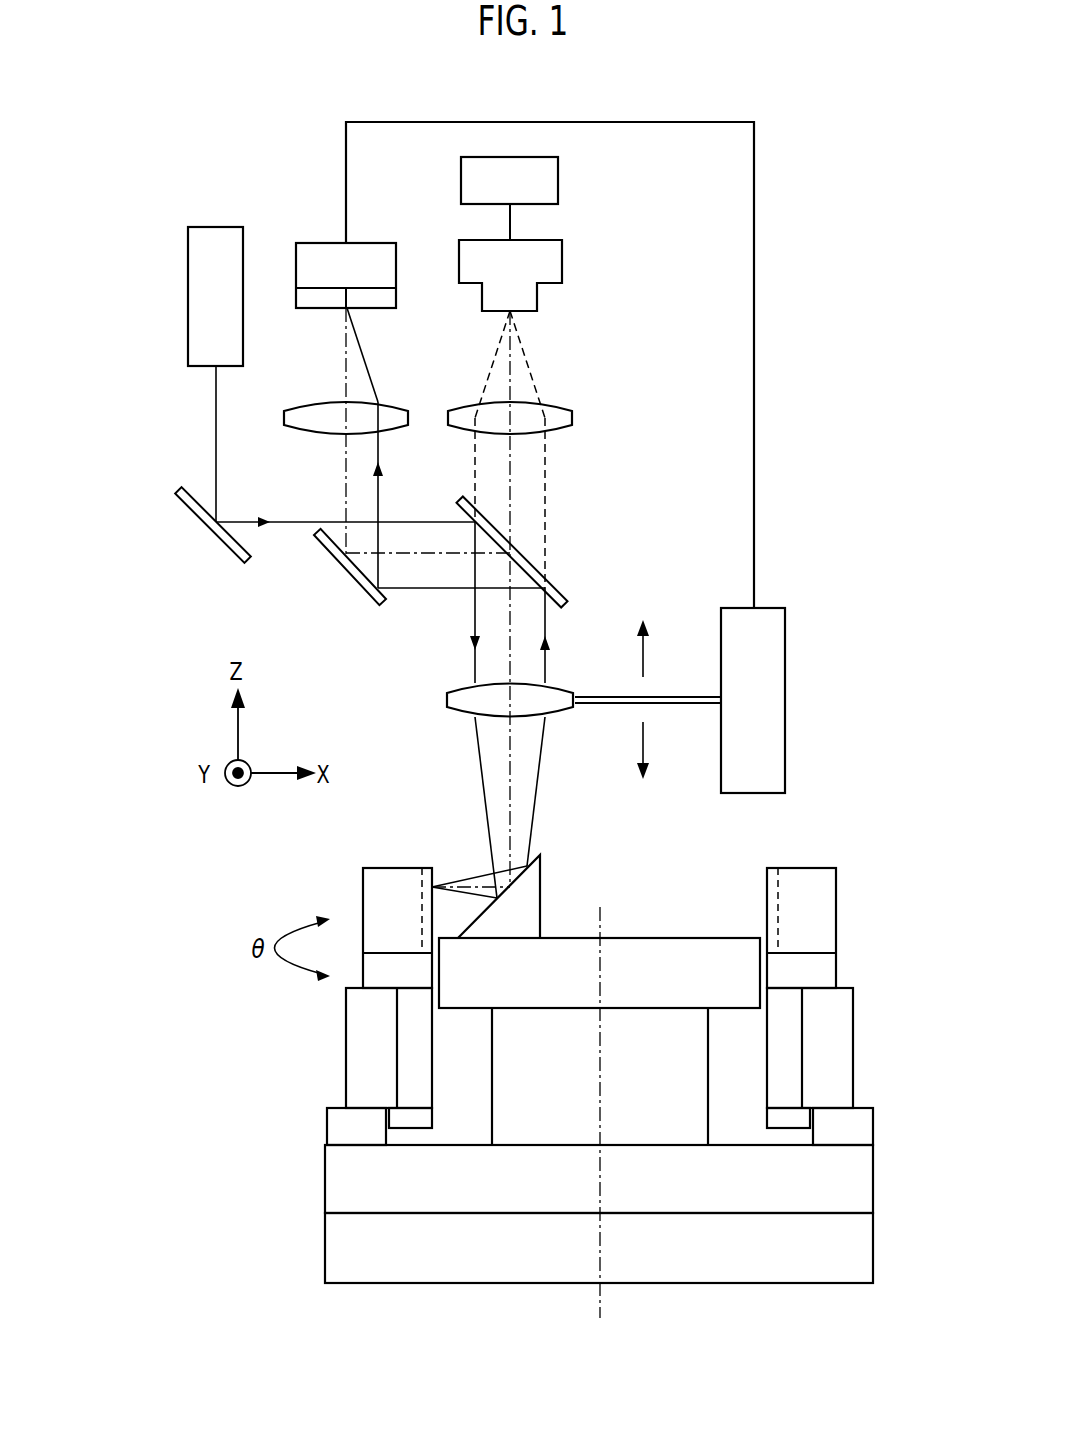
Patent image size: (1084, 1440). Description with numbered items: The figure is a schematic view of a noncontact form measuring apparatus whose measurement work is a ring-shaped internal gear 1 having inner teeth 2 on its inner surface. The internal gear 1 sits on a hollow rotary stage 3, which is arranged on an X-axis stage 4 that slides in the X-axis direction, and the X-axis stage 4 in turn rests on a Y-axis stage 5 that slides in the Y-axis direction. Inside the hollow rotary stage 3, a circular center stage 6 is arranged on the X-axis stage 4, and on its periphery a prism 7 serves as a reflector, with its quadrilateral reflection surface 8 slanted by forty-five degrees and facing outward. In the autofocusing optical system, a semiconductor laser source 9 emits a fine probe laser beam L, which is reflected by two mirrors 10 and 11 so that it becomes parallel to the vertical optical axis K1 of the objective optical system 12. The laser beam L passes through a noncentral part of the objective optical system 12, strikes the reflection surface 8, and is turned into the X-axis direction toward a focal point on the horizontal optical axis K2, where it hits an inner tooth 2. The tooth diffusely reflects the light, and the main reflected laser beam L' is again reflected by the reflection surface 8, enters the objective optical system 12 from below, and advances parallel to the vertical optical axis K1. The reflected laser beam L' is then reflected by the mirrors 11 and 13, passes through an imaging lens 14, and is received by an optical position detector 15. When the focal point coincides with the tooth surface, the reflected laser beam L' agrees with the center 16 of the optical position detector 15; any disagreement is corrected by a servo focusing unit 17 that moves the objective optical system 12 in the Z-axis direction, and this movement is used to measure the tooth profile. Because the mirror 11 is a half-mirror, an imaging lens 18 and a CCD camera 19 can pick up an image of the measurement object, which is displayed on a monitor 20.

The internal gear 1 is at (800, 868).
The inner teeth 2 is at (443, 908).
The rotary stage 3 is at (837, 972).
The X-axis stage 4 is at (753, 1200).
The Y-axis stage 5 is at (405, 1270).
The center stage 6 is at (680, 938).
The prism 7 is at (543, 887).
The reflection surface 8 is at (517, 872).
The laser source 9 is at (210, 227).
The mirror 10 is at (212, 548).
The mirror 11 is at (553, 583).
The objective optical system 12 is at (445, 702).
The mirror 13 is at (353, 590).
The imaging lens 14 is at (385, 404).
The optical position detector 15 is at (326, 243).
The center 16 is at (345, 308).
The servo focusing unit 17 is at (780, 608).
The imaging lens 18 is at (555, 408).
The CCD camera 19 is at (565, 258).
The monitor 20 is at (560, 180).
The vertical optical axis K1 is at (510, 625).
The horizontal optical axis K2 is at (465, 878).
The laser beam L is at (383, 707).
The reflected laser beam L' is at (537, 497).